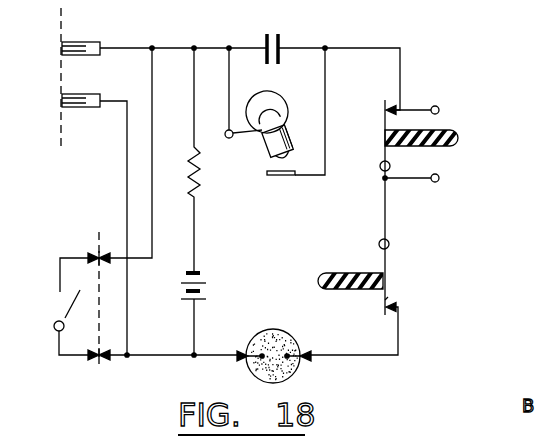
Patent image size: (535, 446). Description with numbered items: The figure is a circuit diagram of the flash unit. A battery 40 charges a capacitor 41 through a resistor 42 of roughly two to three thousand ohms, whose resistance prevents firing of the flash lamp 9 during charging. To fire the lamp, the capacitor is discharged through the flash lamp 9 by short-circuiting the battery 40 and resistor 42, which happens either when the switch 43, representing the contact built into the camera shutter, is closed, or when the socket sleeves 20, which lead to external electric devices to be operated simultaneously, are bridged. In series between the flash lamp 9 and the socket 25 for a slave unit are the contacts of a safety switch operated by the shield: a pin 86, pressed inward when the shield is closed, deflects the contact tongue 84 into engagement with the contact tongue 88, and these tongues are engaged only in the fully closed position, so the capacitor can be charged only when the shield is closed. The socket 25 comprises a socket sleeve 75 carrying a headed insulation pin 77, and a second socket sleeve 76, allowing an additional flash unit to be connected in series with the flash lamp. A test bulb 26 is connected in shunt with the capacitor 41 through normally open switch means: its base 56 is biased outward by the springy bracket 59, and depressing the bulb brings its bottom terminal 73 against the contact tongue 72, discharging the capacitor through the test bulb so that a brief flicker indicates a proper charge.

The socket sleeves 20 is at (58, 97).
The capacitor 41 is at (285, 44).
The bracket 59 is at (230, 130).
The test bulb 26 is at (266, 137).
The base of test bulb 56 is at (263, 142).
The bottom terminal of test bulb 73 is at (287, 158).
The contact tongue 72 is at (281, 178).
The resistor 42 is at (200, 172).
The battery 40 is at (206, 285).
The switch 43 is at (66, 303).
The flash lamp 9 is at (268, 334).
The socket sleeve 75 is at (390, 104).
The headed insulation pin 77 is at (414, 148).
The socket 25 is at (423, 133).
The socket sleeve 76 is at (380, 167).
The contact tongue 88 is at (390, 243).
The pin 86 is at (340, 272).
The contact tongue 84 is at (388, 299).